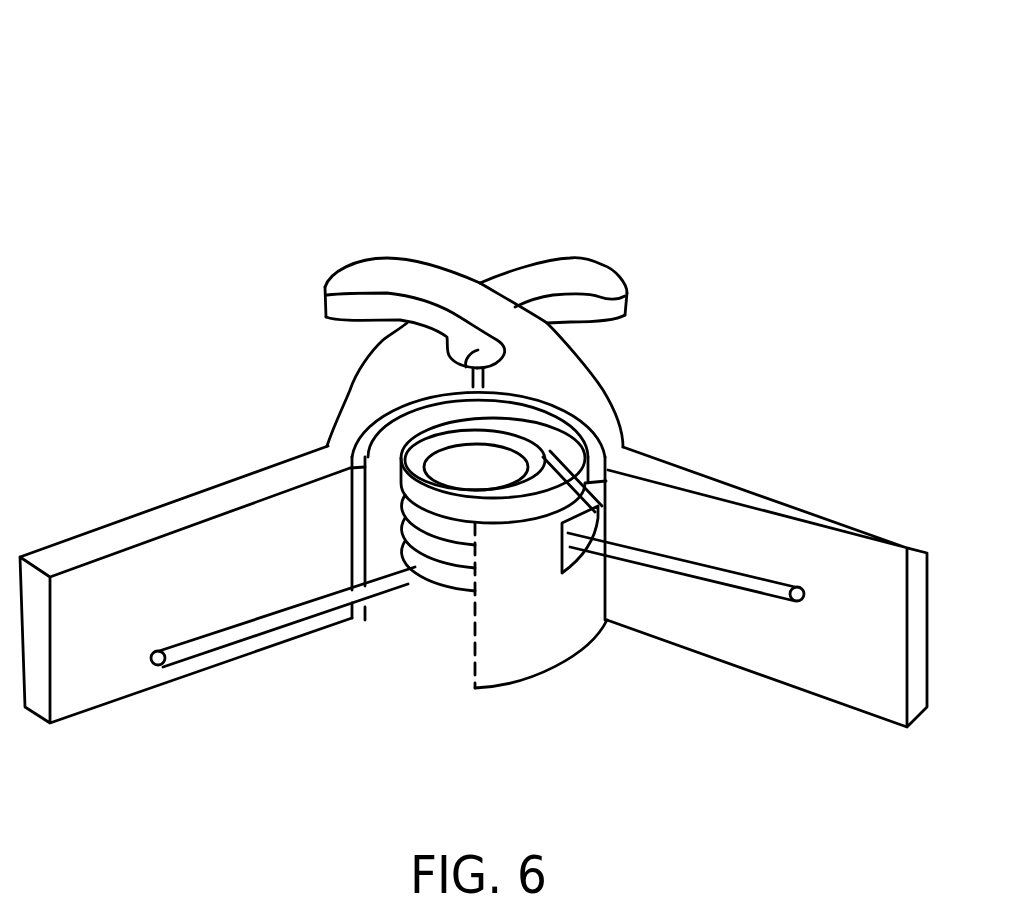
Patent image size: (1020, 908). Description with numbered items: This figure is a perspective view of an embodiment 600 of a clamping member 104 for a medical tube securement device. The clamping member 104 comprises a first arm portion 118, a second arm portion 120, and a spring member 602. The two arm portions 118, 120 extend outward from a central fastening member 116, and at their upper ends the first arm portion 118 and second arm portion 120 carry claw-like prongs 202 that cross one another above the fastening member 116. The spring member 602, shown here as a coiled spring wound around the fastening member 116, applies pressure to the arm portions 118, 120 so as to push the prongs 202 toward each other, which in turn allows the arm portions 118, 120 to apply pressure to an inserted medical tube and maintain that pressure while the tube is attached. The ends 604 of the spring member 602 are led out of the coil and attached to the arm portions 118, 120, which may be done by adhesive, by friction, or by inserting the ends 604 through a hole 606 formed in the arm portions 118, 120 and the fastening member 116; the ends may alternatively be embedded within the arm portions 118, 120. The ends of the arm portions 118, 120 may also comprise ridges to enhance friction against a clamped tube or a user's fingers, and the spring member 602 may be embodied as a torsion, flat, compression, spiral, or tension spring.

The transducer assembly 600 is at (168, 77).
The clamping member 104 is at (206, 381).
The fastening member 116 is at (593, 425).
The first arm portion 118 is at (130, 698).
The second arm portion 120 is at (762, 675).
The prongs 202 is at (360, 259).
The spring member 602 is at (385, 598).
The ends of the spring member 604 is at (183, 655).
The hole 606 is at (585, 530).